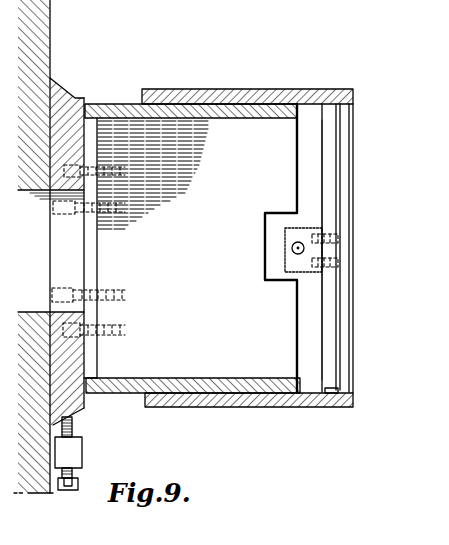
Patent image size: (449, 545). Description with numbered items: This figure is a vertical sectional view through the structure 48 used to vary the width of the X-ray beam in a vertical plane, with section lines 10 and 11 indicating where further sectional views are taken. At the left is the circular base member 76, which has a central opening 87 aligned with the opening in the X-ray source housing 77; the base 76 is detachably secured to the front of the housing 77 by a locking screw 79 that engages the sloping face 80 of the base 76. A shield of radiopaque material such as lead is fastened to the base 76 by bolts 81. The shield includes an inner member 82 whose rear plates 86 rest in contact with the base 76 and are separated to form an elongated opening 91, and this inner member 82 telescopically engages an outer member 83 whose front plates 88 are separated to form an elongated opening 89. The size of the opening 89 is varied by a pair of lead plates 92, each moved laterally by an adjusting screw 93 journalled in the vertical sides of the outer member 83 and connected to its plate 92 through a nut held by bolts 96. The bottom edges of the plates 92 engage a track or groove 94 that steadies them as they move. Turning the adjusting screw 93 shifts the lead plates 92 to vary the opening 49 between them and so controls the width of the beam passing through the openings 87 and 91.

The section line 10- 10 is at (240, 80).
The section line 11- 11 is at (75, 248).
The structure 48 is at (176, 84).
The opening 49 is at (323, 188).
The circular base member 76 is at (72, 96).
The X-ray source housing 77 is at (37, 493).
The locking screw 79 is at (79, 488).
The sloping face 80 is at (60, 421).
The bolts 81 is at (125, 208).
The inner member 82 is at (117, 110).
The outer member 83 is at (284, 92).
The rear plates 86 is at (90, 358).
The central opening 87 is at (84, 272).
The front plates 88 is at (352, 110).
The elongated opening 89 is at (343, 168).
The elongated opening 91 is at (92, 249).
The lead plates 92 is at (323, 317).
The adjusting screw 93 is at (291, 250).
The track or groove 94 is at (331, 400).
The bolts 96 is at (338, 263).